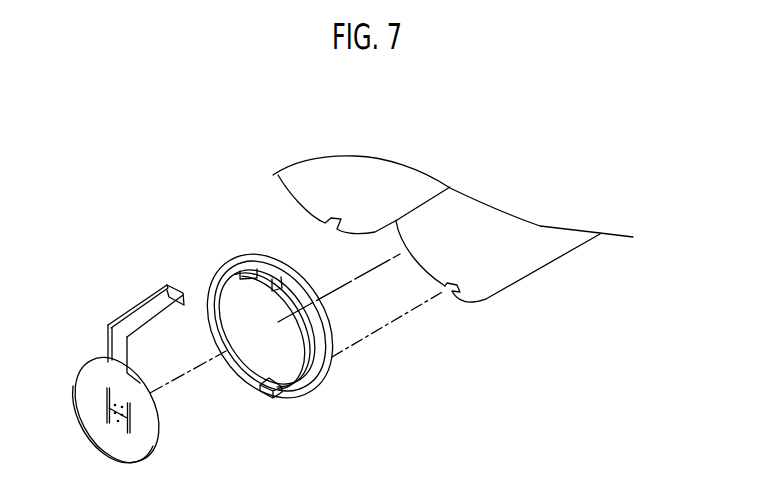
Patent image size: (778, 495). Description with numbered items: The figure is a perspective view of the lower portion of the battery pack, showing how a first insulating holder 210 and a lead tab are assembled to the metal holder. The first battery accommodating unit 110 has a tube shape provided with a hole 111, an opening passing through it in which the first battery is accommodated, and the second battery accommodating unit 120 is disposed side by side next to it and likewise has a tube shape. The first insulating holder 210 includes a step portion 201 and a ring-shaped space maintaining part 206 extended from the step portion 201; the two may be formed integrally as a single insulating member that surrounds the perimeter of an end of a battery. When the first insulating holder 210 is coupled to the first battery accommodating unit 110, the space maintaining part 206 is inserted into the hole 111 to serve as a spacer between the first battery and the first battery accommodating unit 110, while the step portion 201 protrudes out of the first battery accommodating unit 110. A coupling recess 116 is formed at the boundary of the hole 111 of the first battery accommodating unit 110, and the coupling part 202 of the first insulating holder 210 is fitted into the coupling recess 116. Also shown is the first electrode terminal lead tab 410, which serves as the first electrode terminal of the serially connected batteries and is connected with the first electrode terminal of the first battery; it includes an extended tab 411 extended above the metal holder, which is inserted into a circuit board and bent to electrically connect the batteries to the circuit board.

The first battery accommodating unit 110 is at (488, 292).
The hole 111 is at (417, 282).
The coupling recess 116 is at (446, 294).
The second battery accommodating unit 120 is at (348, 167).
The step portion 201 is at (240, 368).
The coupling part 202 is at (267, 399).
The space maintaining part 206 is at (267, 257).
The first insulating holder 210 is at (270, 331).
The first electrode terminal lead tab 410 is at (116, 371).
The extended tab 411 is at (142, 314).